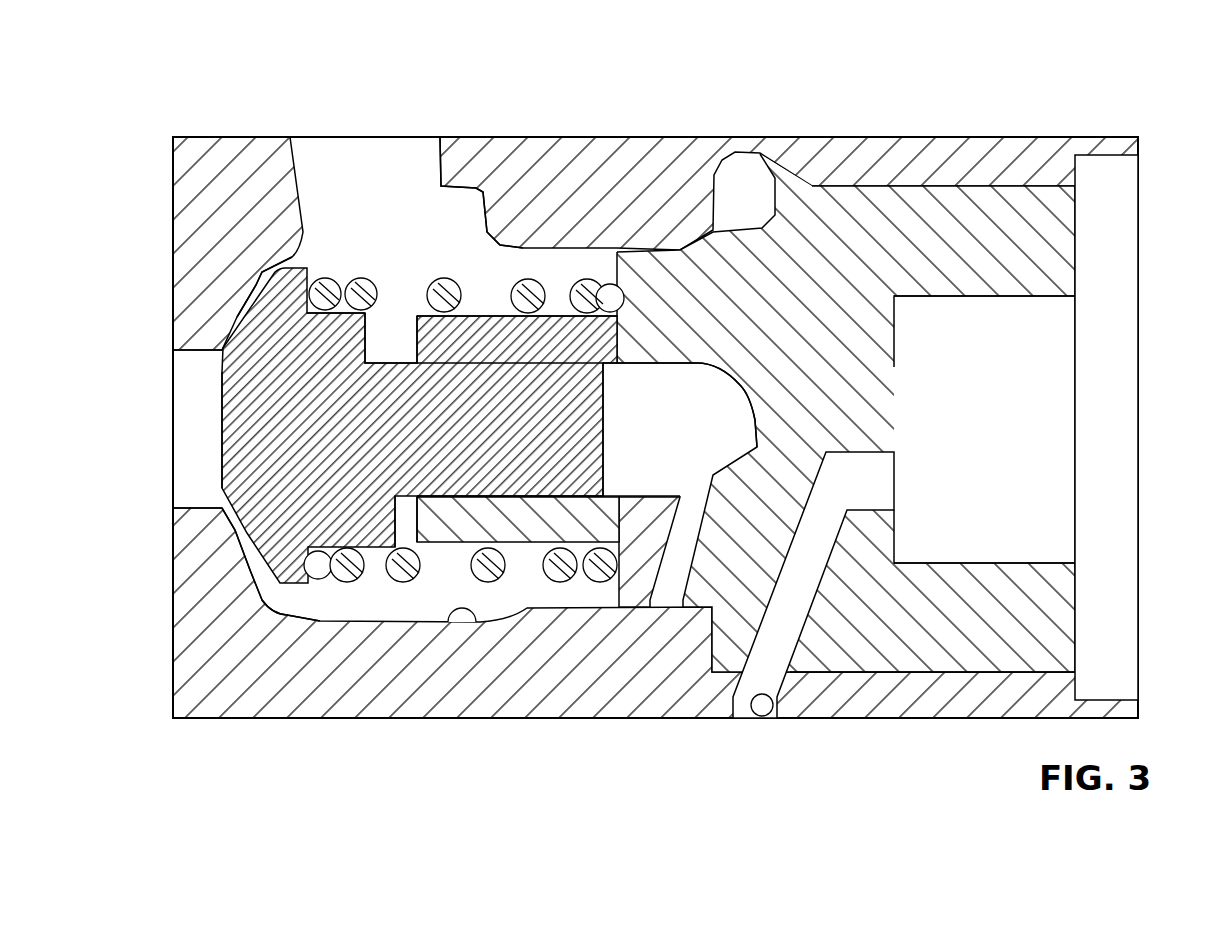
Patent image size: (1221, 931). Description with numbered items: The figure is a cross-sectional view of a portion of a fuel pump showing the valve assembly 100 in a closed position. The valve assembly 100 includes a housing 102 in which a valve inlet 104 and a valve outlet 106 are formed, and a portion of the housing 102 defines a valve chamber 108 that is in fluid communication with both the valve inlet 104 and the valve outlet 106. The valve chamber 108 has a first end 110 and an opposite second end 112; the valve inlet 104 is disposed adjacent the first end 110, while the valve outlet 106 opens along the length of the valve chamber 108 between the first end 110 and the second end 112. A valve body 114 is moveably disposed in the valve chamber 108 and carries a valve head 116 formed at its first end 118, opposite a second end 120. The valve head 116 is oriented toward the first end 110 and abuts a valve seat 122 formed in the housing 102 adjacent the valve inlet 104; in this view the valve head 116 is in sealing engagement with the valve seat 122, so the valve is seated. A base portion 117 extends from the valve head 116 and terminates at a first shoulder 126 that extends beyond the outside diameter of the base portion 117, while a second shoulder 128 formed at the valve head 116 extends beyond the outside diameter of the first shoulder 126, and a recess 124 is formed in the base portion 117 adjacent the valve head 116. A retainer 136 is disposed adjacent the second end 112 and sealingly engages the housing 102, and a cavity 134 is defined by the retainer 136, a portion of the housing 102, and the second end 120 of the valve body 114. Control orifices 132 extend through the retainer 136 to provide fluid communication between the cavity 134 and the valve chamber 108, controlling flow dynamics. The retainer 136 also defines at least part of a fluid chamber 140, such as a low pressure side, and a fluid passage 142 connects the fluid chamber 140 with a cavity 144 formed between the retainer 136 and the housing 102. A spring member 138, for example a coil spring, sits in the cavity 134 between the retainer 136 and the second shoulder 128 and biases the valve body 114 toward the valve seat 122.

The valve assembly 100 is at (197, 66).
The housing 102 is at (652, 137).
The valve inlet 104 is at (172, 372).
The valve outlet 106 is at (440, 184).
The valve chamber 108 is at (460, 622).
The first end 110 is at (194, 420).
The second end 112 is at (765, 425).
The valve body 114 is at (503, 474).
The valve head 116 is at (245, 318).
The base portion 117 is at (600, 540).
The first end 118 is at (214, 462).
The second end 120 is at (607, 428).
The valve seat 122 is at (176, 560).
The recess 124 is at (378, 362).
The first shoulder 126 is at (357, 582).
The second shoulder 128 is at (330, 590).
The control orifices 132 is at (735, 590).
The cavity 134 is at (758, 417).
The retainer 136 is at (950, 215).
The spring member 138 is at (326, 280).
The fluid chamber 140 is at (1043, 297).
The fluid passage 142 is at (880, 570).
The cavity 144 is at (762, 717).